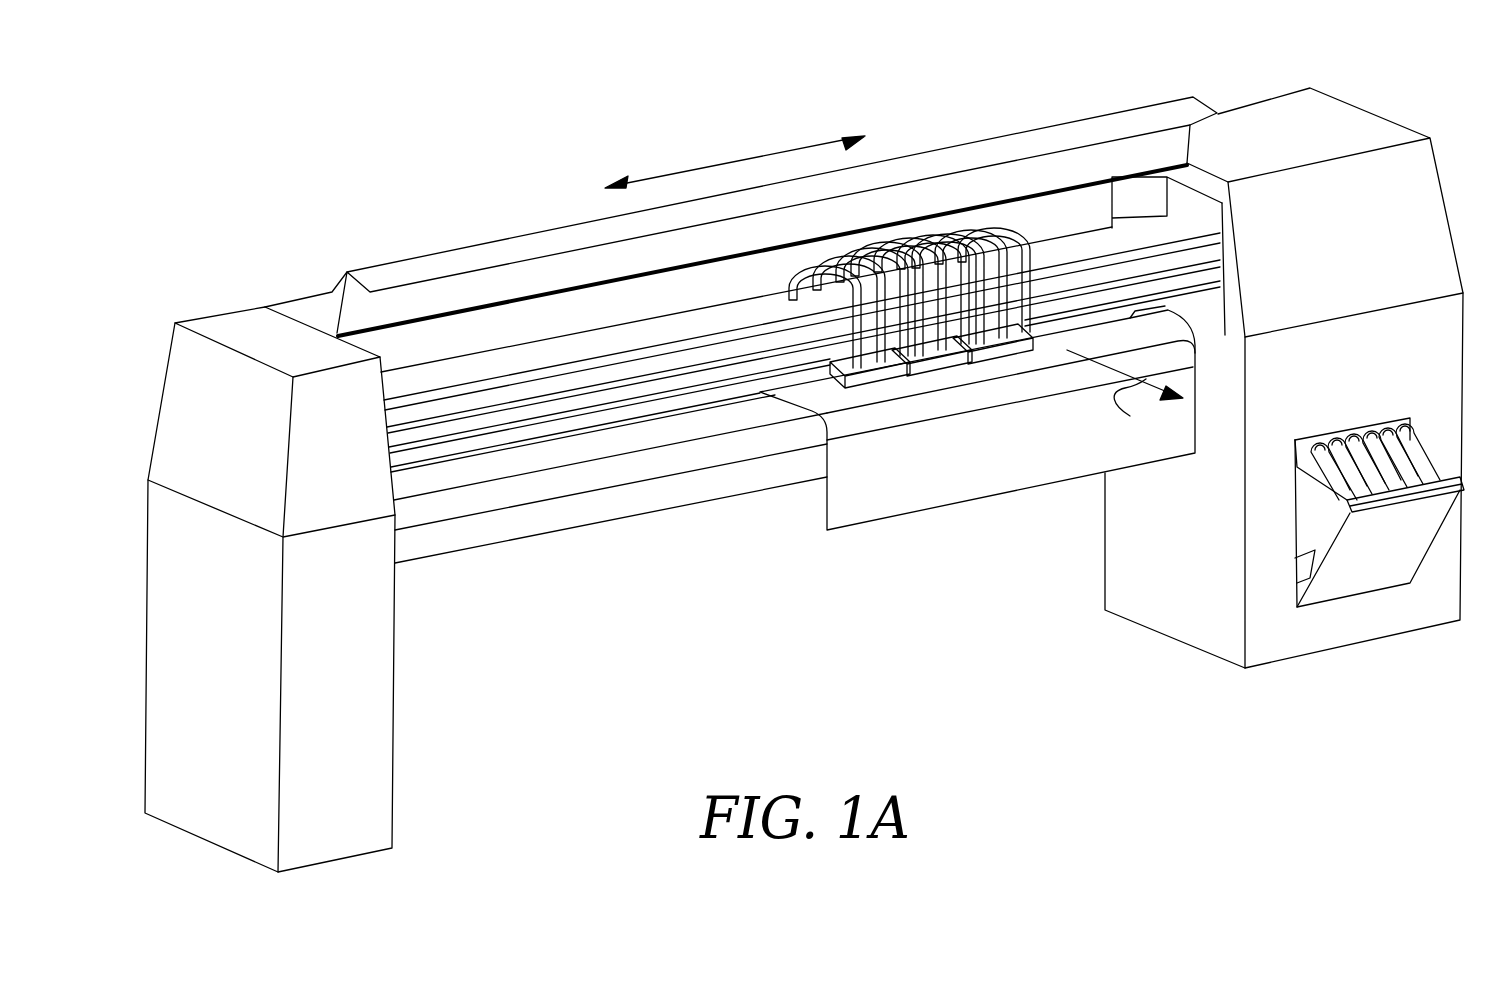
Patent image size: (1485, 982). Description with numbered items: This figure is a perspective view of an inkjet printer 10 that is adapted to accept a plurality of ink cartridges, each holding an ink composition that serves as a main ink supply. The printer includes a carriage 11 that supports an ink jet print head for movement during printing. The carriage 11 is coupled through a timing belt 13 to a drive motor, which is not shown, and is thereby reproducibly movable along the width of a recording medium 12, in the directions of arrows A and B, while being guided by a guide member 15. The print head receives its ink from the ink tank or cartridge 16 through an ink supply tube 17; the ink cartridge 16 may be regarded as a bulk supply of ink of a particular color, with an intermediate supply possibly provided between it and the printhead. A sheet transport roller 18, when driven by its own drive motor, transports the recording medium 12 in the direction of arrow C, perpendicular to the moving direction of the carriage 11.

The printer 10 is at (472, 186).
The carriage 11 is at (943, 368).
The recording medium 12 is at (873, 508).
The timing belt 13 is at (483, 393).
The guide member 15 is at (697, 393).
The ink cartridge 16 is at (1320, 498).
The ink supply tube 17 is at (973, 245).
The sheet transport roller 18 is at (587, 440).